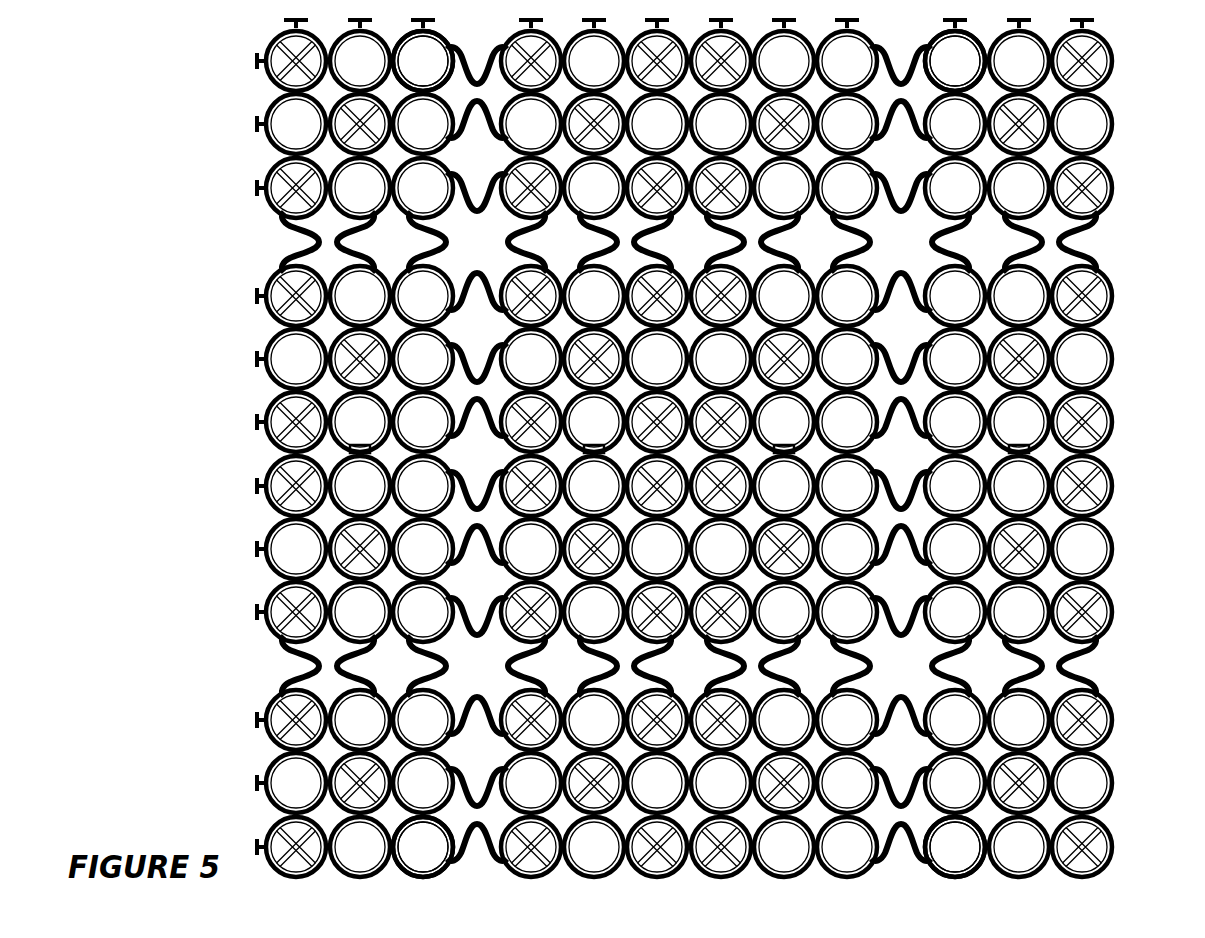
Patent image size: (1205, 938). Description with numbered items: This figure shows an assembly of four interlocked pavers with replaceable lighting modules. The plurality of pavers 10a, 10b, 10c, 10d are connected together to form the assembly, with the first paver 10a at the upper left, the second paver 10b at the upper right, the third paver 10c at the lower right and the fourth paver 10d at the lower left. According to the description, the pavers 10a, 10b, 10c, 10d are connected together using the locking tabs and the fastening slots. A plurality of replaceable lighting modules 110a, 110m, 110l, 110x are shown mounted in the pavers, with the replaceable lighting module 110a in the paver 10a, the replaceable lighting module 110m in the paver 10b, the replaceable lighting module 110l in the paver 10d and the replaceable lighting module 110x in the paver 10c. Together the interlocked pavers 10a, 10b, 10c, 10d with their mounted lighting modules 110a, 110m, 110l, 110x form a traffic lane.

The paver 10a is at (433, 236).
The paver 10b is at (944, 236).
The paver 10c is at (943, 652).
The paver 10d is at (433, 652).
The replaceable lighting module 110a is at (413, 70).
The replaceable lighting module 110m is at (965, 70).
The replaceable lighting module 110l is at (413, 835).
The replaceable lighting module 110x is at (965, 835).